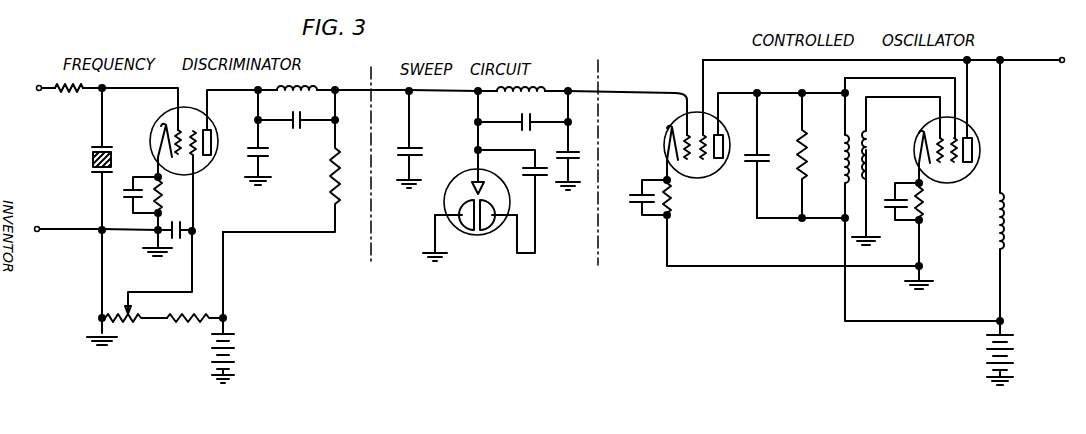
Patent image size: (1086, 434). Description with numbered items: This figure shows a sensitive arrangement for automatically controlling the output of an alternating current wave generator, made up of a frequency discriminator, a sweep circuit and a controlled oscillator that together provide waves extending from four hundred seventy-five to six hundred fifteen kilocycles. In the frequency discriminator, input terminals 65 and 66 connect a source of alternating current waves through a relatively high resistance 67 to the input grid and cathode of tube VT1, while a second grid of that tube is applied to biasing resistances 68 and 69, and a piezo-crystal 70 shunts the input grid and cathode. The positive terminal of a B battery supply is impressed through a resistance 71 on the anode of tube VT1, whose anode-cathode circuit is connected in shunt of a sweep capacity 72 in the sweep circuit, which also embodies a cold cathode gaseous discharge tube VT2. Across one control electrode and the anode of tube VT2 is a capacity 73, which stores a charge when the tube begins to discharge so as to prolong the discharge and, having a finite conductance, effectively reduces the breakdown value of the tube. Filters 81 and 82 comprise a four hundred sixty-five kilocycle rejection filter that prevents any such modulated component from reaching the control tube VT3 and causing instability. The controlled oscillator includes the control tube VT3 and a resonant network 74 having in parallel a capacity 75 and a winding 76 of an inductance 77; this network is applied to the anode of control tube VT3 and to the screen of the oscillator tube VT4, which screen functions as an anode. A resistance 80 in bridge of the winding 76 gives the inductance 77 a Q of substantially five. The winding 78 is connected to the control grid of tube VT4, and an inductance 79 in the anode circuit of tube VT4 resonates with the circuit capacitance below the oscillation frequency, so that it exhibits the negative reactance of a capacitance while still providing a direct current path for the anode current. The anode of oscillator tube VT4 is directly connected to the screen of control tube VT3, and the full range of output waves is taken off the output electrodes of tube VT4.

The input terminal 65 is at (38, 86).
The input terminal 66 is at (38, 227).
The resistance 67 is at (70, 93).
The biasing resistance 68 is at (139, 323).
The biasing resistance 69 is at (186, 323).
The piezo-crystal 70 is at (92, 160).
The resistance 71 is at (330, 172).
The sweep capacity 72 is at (421, 157).
The capacity 73 is at (542, 177).
The resonant network 74 is at (778, 205).
The capacity 75 is at (760, 153).
The winding 76 is at (840, 140).
The inductance 77 is at (856, 187).
The winding 78 is at (871, 160).
The inductance 79 is at (1007, 222).
The resistance 80 is at (806, 178).
The filter 81 is at (287, 102).
The filter 82 is at (547, 108).
The tube VT1 is at (157, 137).
The cold cathode gaseous discharge tube VT2 is at (471, 170).
The control tube VT3 is at (663, 140).
The oscillator tube VT4 is at (917, 140).